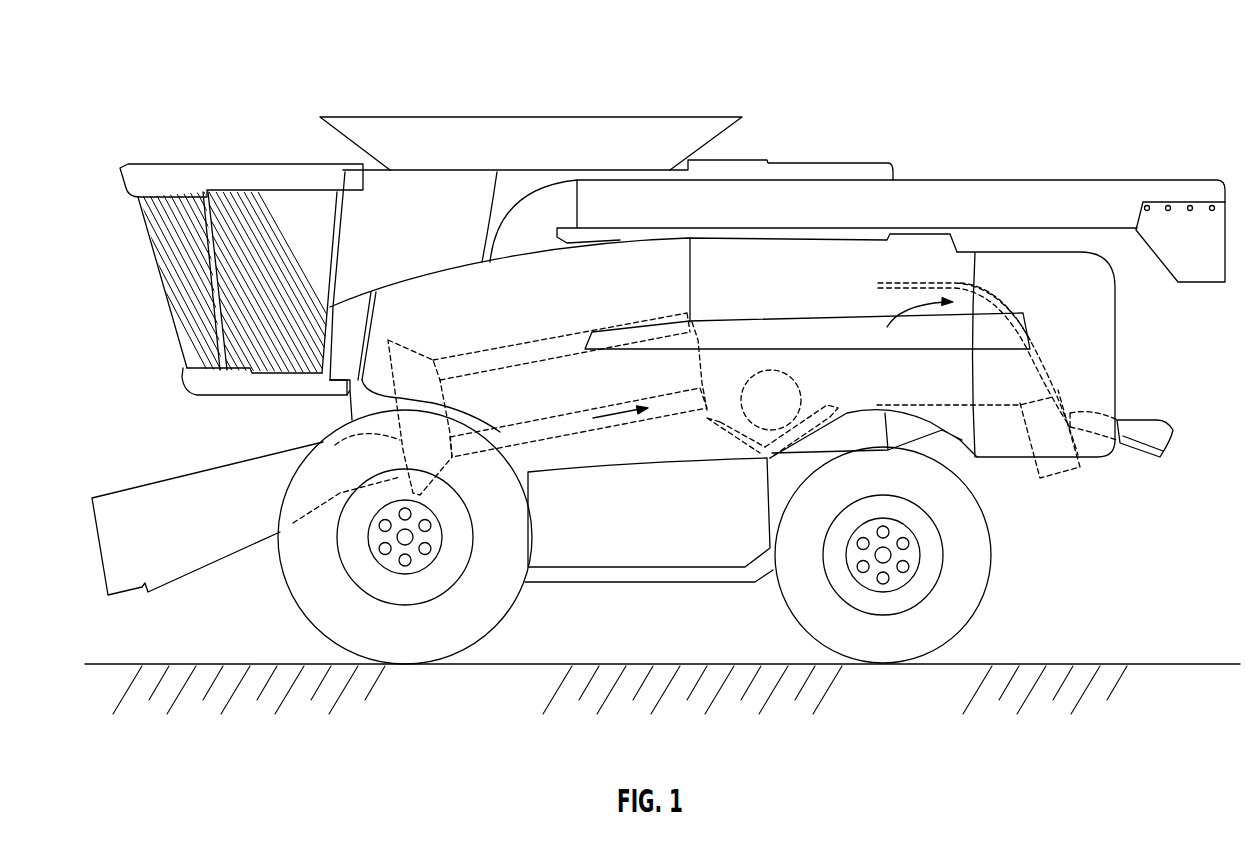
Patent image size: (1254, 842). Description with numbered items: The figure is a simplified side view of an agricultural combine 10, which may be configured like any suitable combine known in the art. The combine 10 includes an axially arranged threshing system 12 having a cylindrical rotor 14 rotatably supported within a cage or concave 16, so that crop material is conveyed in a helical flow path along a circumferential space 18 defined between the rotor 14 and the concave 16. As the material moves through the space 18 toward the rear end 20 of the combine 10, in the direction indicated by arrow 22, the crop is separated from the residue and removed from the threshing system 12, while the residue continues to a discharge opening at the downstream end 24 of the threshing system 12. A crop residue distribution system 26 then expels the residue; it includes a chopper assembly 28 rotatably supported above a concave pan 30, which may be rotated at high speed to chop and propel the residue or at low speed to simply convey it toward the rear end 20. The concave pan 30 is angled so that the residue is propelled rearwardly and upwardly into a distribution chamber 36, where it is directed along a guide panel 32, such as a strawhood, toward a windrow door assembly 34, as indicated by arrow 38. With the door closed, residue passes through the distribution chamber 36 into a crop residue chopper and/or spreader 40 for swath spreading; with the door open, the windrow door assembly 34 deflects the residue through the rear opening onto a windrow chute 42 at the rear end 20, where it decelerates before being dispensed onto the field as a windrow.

The agricultural combine 10 is at (1076, 126).
The threshing system 12 is at (482, 340).
The cylindrical rotor 14 is at (535, 362).
The concave 16 is at (573, 433).
The circumferential space 18 is at (543, 430).
The rear end 20 is at (1116, 362).
The arrow 22 is at (627, 413).
The downstream end 24 is at (700, 362).
The crop residue distribution system 26 is at (826, 313).
The chopper assembly 28 is at (765, 458).
The concave pan 30 is at (708, 428).
The guide panel 32 is at (903, 282).
The windrow door assembly 34 is at (1002, 291).
The distribution chamber 36 is at (953, 378).
The arrow 38 is at (893, 327).
The crop residue chopper and/or spreader 40 is at (1048, 468).
The windrow chute 42 is at (1160, 435).